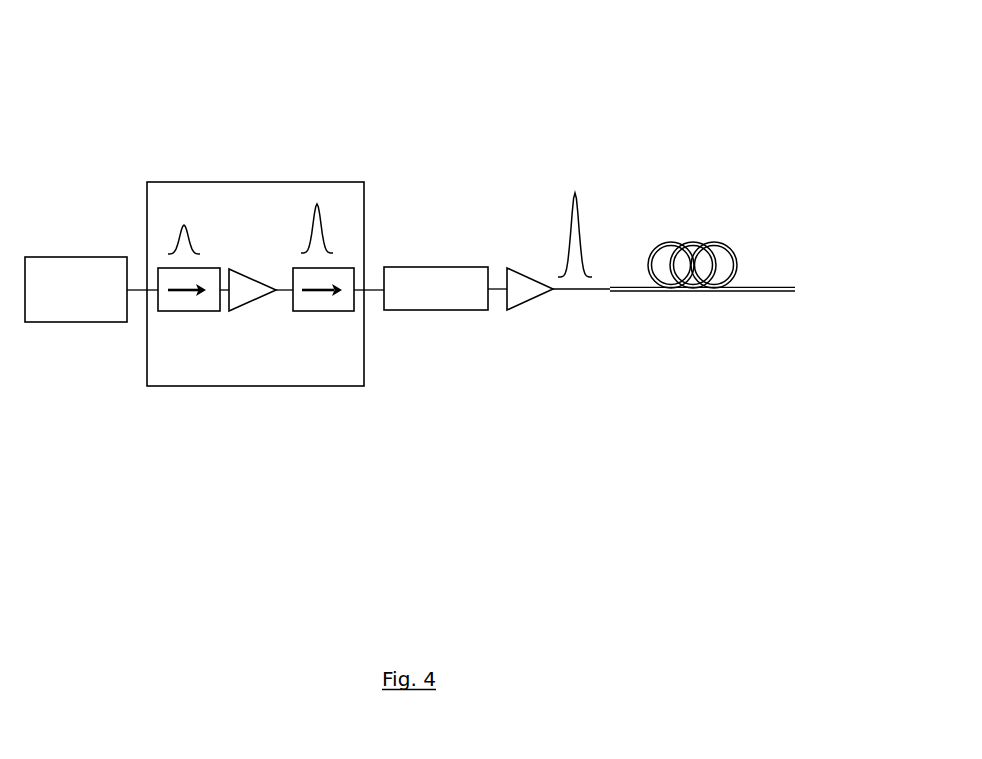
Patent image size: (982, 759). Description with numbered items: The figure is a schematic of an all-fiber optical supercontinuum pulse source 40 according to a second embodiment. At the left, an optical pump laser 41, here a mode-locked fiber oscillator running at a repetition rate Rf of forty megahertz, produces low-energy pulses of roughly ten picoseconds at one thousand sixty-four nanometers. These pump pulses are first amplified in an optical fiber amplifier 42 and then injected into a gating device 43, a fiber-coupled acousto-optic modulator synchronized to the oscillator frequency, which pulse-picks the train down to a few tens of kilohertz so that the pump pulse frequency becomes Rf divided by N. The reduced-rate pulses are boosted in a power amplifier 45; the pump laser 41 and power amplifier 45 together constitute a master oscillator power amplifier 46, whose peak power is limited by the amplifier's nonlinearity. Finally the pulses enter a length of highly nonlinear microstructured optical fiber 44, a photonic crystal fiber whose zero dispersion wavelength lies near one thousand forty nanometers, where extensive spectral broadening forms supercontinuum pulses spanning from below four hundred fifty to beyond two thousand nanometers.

The optical supercontinuum pulse source 40 is at (153, 90).
The optical pump laser 41 is at (65, 257).
The optical fiber amplifier 42 is at (257, 182).
The gating device 43 is at (440, 267).
The highly nonlinear microstructured optical fiber 44 is at (693, 243).
The power amplifier 45 is at (528, 268).
The master oscillator power amplifier 46 is at (216, 432).